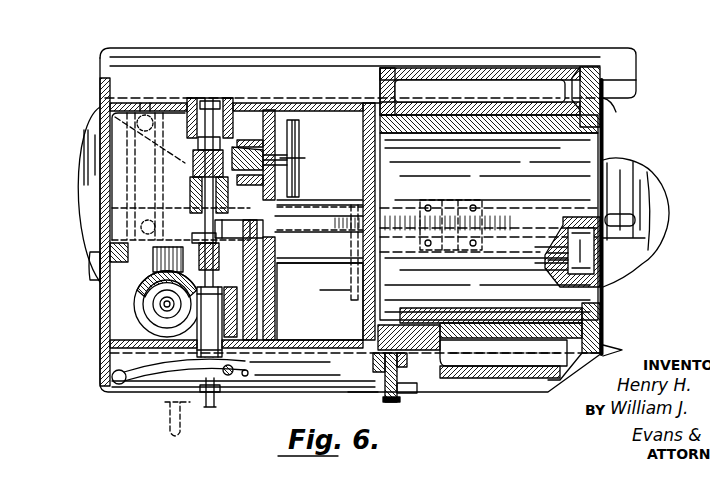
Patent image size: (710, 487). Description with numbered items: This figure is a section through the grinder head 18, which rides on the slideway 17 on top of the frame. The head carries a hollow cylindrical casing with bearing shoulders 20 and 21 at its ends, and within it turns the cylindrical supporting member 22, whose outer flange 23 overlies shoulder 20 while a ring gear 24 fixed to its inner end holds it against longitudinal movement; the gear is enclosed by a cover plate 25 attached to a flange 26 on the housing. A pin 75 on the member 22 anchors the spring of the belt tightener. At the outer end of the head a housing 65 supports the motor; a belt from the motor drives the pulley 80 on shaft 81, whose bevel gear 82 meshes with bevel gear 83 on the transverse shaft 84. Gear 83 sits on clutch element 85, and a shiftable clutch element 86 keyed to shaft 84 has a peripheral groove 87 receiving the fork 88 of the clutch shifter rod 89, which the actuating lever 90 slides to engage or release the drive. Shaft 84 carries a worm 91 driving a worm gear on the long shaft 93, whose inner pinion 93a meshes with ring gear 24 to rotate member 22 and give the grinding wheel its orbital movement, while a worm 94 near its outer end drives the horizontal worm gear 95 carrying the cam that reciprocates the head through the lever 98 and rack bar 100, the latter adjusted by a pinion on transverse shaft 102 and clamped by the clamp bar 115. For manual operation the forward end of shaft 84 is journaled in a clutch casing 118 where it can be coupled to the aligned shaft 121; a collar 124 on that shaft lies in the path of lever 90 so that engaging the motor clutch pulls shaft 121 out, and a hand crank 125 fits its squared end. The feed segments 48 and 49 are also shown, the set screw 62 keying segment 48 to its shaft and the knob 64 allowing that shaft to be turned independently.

The slideway 17 is at (633, 70).
The grinder head 18 is at (312, 75).
The bearing shoulder 20 is at (489, 100).
The bearing shoulder 21 is at (378, 101).
The cylindrical supporting member 22 is at (489, 226).
The flange 23 is at (372, 118).
The ring gear 24 is at (615, 334).
The cover plate 25 is at (606, 290).
The flange 26 is at (588, 78).
The gear segment 48 is at (388, 403).
The gear segment 49 is at (458, 390).
The set screw 62 is at (366, 394).
The knob 64 is at (402, 394).
The housing 65 is at (185, 175).
The pin 75 is at (279, 298).
The pulley 80 is at (300, 150).
The shaft 81 is at (300, 165).
The bevel gear 82 is at (212, 96).
The bevel gear 83 is at (168, 108).
The transverse shaft 84 is at (100, 152).
The clutch element 85 is at (298, 200).
The shiftable clutch element 86 is at (275, 217).
The peripheral groove 87 is at (105, 242).
The fork 88 is at (283, 238).
The clutch shifter rod 89 is at (279, 323).
The actuating lever 90 is at (150, 380).
The worm 91 is at (279, 278).
The shaft 93 is at (540, 268).
The pinion 93a is at (612, 262).
The worm 94 is at (128, 305).
The worm gear 95 is at (128, 326).
The lever 98 is at (120, 212).
The rack bar 100 is at (510, 212).
The transverse shaft 102 is at (440, 250).
The clamp bar 115 is at (380, 292).
The clutch casing 118 is at (308, 377).
The shaft 121 is at (212, 408).
The collar 124 is at (222, 392).
The hand crank 125 is at (184, 433).